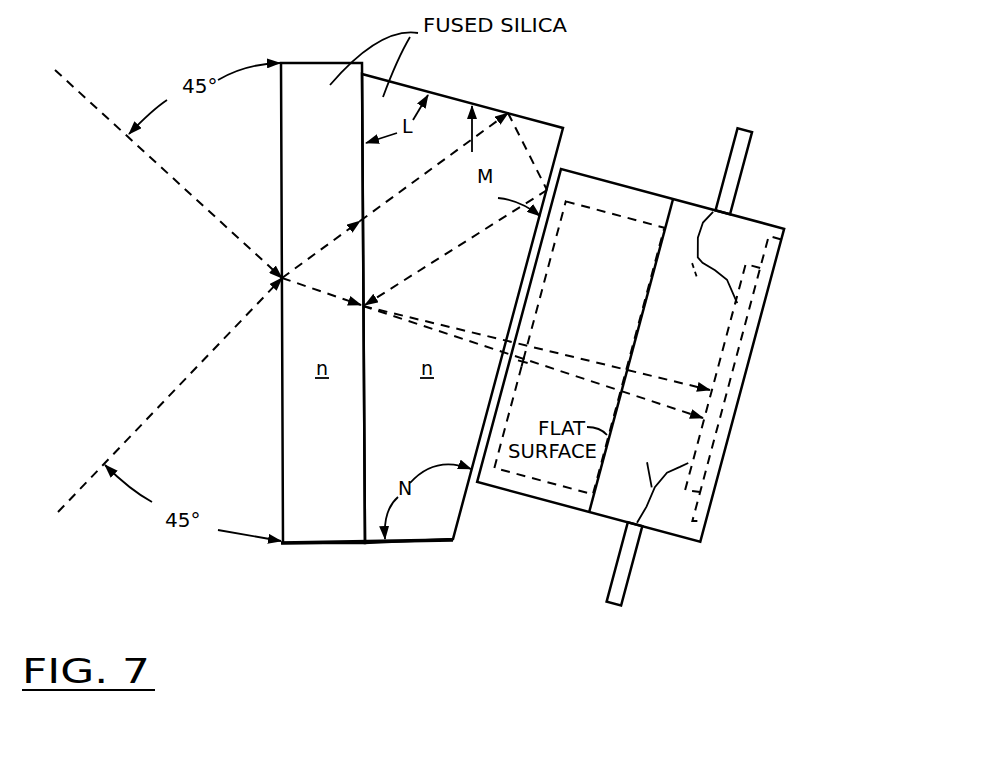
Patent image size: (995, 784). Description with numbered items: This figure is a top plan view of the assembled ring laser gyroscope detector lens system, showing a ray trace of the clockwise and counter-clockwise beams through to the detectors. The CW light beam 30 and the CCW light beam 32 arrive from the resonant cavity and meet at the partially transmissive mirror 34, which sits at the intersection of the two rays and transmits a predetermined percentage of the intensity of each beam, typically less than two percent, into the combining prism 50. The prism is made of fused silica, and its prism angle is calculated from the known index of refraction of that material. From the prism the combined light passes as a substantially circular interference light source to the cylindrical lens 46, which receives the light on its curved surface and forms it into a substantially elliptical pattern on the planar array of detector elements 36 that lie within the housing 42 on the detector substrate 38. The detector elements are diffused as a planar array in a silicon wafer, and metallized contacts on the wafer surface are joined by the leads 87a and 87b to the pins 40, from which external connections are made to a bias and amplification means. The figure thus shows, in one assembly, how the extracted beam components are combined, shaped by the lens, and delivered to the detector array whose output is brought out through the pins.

The CW light beam 30 is at (213, 217).
The CCW light beam 32 is at (224, 337).
The partially transmissive mirror 34 is at (330, 600).
The detector elements 36 is at (702, 425).
The detector substrate 38 is at (697, 543).
The pins 40 is at (742, 145).
The housing 42 is at (593, 168).
The cylindrical lens 46 is at (530, 352).
The combining prism 50 is at (432, 462).
The lead 87a is at (716, 256).
The lead 87b is at (653, 487).